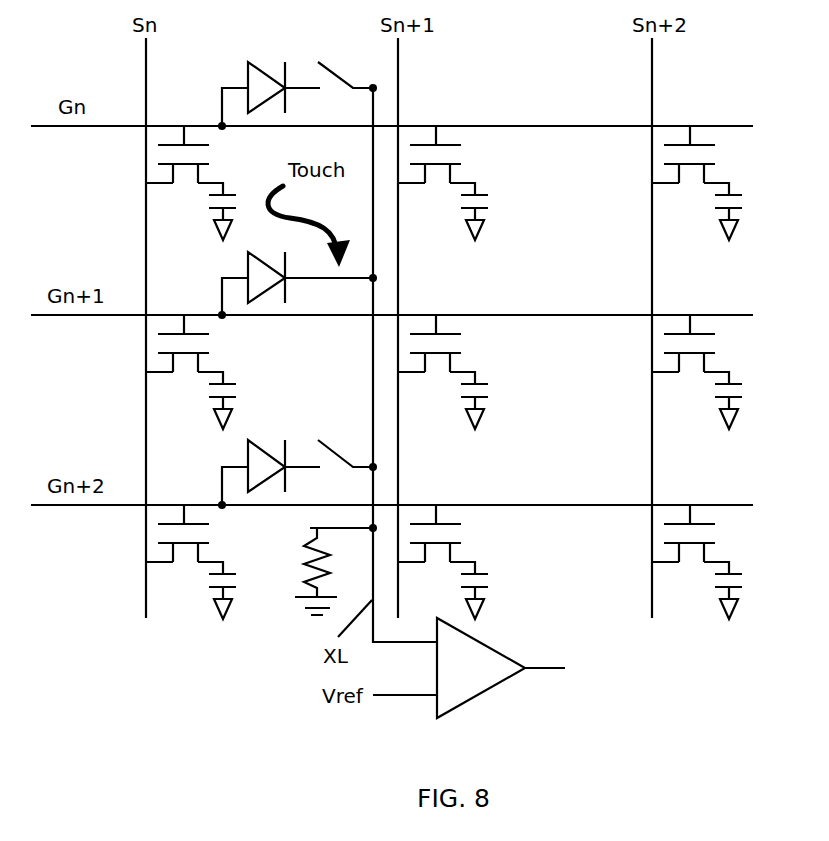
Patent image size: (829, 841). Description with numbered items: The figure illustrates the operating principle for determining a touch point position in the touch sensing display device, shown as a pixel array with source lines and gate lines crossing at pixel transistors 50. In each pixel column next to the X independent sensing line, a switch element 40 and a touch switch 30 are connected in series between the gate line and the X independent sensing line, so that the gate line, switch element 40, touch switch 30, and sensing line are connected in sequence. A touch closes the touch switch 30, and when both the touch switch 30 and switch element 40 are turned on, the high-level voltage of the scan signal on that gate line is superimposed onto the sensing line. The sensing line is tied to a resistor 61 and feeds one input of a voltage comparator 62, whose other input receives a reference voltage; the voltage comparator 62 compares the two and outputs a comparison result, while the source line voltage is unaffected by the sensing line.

The touch switch 30 is at (354, 442).
The switch element 40 is at (240, 451).
The thin film transistor 50 is at (216, 345).
The resistor 61 is at (294, 562).
The voltage comparator 62 is at (490, 692).